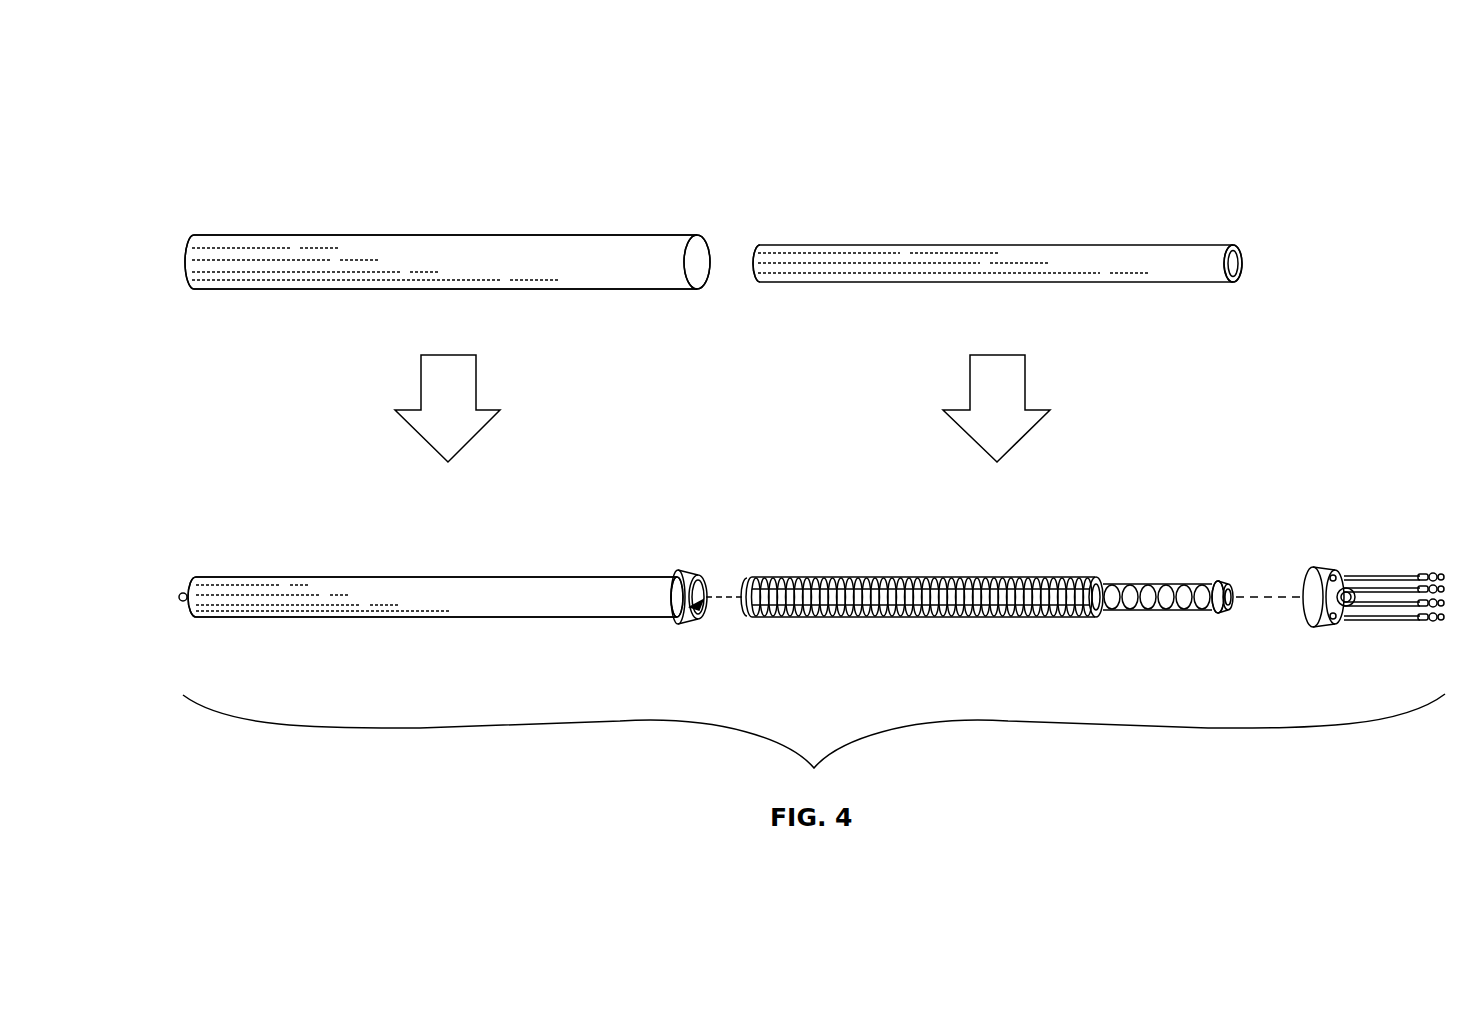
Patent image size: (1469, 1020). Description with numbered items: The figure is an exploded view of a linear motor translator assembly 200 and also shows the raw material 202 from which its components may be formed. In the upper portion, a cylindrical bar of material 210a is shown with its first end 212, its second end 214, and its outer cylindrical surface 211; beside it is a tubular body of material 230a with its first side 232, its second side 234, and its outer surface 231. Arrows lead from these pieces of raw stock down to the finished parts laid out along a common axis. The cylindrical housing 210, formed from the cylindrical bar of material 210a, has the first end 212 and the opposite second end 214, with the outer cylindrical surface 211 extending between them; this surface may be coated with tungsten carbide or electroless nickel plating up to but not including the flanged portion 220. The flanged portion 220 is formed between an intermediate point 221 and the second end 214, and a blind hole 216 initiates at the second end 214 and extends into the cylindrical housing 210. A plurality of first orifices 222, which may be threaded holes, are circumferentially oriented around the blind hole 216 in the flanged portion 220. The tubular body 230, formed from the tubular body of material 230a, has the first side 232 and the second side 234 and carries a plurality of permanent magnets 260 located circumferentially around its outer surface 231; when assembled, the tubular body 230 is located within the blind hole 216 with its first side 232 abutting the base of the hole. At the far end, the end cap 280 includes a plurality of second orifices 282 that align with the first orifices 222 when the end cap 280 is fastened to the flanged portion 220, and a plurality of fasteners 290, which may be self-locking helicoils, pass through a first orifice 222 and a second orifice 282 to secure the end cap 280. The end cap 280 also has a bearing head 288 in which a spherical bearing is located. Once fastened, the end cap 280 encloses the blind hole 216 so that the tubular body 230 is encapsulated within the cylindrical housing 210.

The raw material 202 is at (193, 129).
The cylindrical bar of material 210a is at (528, 226).
The outer cylindrical surface 211 is at (410, 234).
The first end 212 is at (185, 262).
The second end 214 is at (700, 237).
The tubular body of material 230a is at (930, 220).
The outer surface 231 is at (1075, 244).
The first side 232 is at (750, 264).
The second side 234 is at (1245, 262).
The linear motor translator assembly 200 is at (193, 476).
The cylindrical housing 210 is at (503, 556).
The flanged portion 220 is at (696, 634).
The intermediate point 221 is at (677, 574).
The first orifices 222 is at (712, 590).
The blind hole 216 is at (705, 604).
The tubular body 230 is at (862, 572).
The permanent magnets 260 is at (942, 578).
The end cap 280 is at (1320, 560).
The second orifices 282 is at (1345, 612).
The bearing head 288 is at (1355, 594).
The fasteners 290 is at (1432, 624).